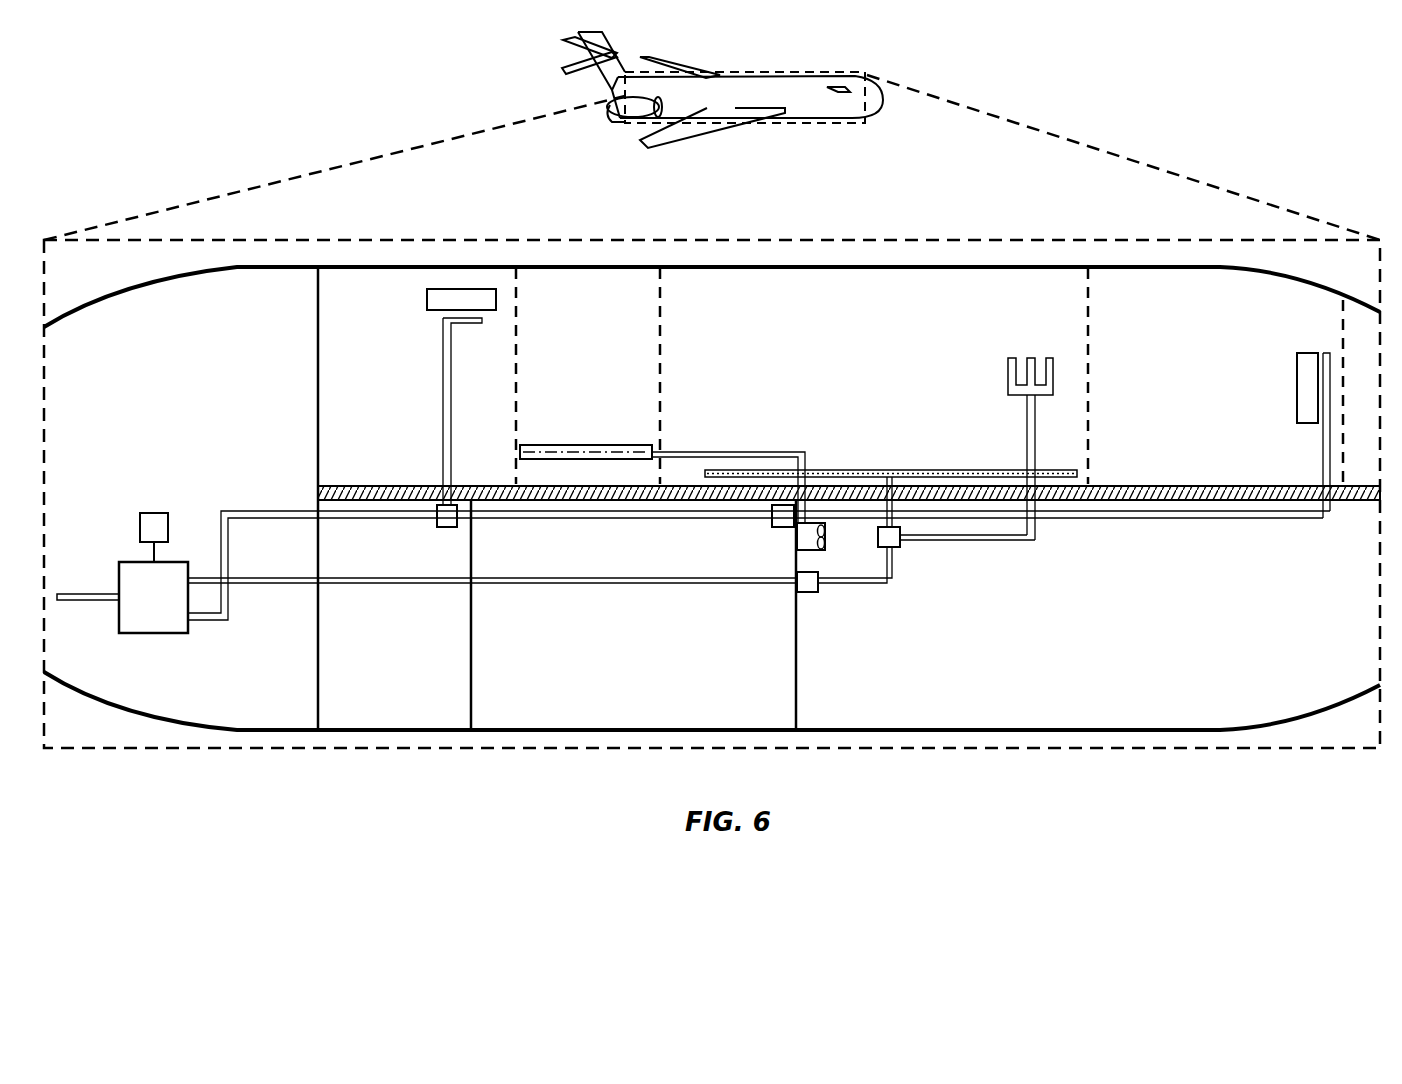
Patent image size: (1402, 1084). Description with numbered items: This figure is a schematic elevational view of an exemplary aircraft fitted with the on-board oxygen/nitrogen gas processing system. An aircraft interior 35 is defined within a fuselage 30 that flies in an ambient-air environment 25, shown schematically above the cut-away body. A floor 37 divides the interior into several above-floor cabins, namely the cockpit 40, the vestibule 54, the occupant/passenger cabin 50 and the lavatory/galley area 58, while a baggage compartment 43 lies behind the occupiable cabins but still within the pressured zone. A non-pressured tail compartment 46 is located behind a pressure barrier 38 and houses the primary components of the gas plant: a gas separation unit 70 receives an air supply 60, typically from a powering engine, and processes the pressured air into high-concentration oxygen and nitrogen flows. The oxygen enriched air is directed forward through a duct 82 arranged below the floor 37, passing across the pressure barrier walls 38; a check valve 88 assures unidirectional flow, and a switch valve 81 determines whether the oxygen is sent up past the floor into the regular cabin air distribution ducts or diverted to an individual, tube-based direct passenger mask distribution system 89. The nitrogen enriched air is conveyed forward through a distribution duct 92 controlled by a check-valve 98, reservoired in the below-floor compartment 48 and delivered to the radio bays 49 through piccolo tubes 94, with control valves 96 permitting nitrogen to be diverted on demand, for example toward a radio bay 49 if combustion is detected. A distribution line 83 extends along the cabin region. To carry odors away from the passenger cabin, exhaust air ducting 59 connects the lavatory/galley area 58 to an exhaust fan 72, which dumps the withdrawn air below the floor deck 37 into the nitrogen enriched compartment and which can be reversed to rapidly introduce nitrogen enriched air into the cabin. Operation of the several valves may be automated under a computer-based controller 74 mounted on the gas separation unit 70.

The ambient-air environment 25 is at (1122, 129).
The fuselage 30 is at (793, 271).
The aircraft interior 35 is at (977, 442).
The floor 37 is at (1115, 486).
The pressure barrier 38 is at (318, 297).
The cockpit 40 is at (1349, 389).
The baggage compartment 43 is at (372, 397).
The non-pressured tail compartment 46 is at (165, 397).
The cargo compartment 48 is at (1260, 572).
The radio bay 49 is at (427, 298).
The occupant/passenger cabin 50 is at (859, 362).
The vestibule 54 is at (1189, 392).
The lavatory/galley area 58 is at (579, 362).
The exhaust air ducting 59 is at (590, 446).
The air supply 60 is at (80, 601).
The gas separation unit 70 is at (140, 611).
The exhaust fan 72 is at (830, 538).
The computer-based controller 74 is at (140, 521).
The switch valve 81 is at (896, 542).
The duct 82 is at (445, 584).
The distribution duct 83 is at (838, 469).
The check valve 88 is at (812, 588).
The direct passenger mask distribution system 89 is at (1023, 352).
The distribution duct 92 is at (292, 518).
The piccolo tube 94 is at (465, 323).
The control valve 96 is at (443, 521).
The check-valve 98 is at (778, 521).